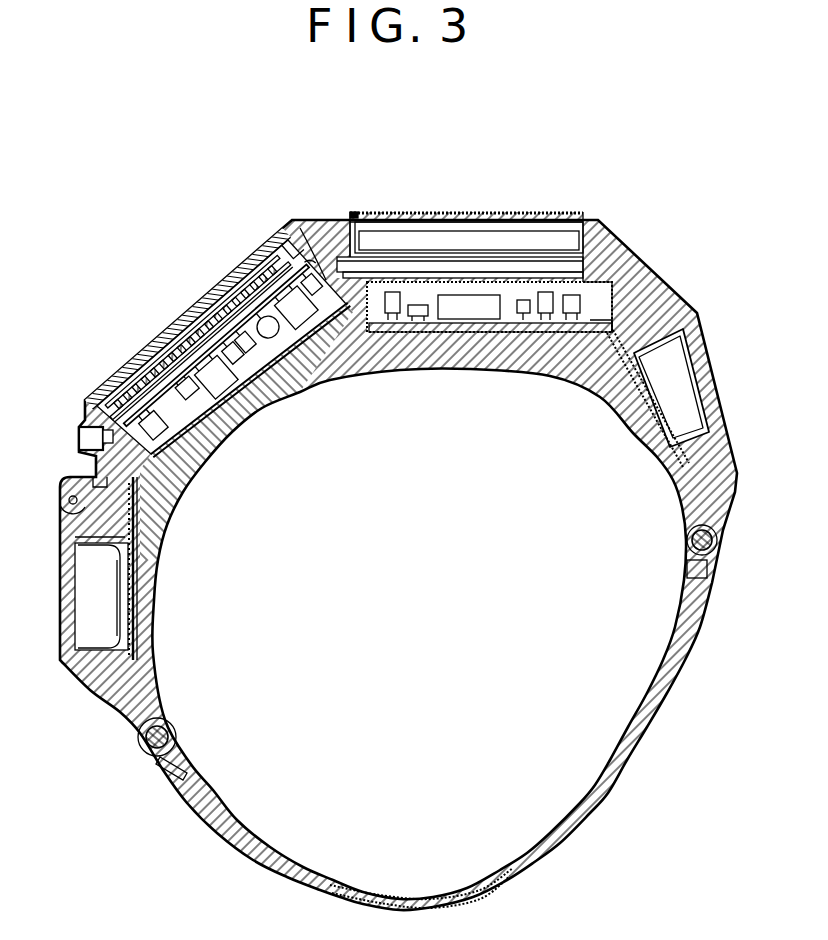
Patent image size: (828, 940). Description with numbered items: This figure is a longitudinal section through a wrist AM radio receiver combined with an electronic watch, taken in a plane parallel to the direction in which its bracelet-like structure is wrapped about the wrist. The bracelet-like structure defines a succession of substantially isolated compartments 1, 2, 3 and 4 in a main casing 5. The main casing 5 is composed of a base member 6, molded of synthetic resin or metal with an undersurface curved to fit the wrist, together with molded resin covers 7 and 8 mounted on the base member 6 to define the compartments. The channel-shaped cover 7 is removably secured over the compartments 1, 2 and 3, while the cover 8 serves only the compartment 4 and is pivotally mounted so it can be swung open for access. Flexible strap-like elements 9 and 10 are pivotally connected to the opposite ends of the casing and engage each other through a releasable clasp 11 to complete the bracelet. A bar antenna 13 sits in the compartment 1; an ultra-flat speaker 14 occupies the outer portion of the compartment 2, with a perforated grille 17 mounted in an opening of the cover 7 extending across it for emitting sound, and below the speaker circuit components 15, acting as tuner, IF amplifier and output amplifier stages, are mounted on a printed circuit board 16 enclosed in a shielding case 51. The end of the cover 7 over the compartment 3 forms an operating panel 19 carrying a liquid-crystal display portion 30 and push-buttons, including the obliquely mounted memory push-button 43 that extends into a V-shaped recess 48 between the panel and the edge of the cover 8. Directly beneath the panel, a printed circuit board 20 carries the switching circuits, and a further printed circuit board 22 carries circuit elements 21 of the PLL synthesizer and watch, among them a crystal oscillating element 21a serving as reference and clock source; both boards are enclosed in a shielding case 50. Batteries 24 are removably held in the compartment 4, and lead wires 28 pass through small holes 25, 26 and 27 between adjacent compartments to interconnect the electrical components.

The compartment 1 is at (697, 320).
The compartment 2 is at (607, 263).
The compartment 3 is at (278, 250).
The compartment 4 is at (140, 553).
The main casing 5 is at (446, 394).
The base member 6 is at (508, 345).
The cover 7 is at (331, 221).
The cover 8 is at (77, 658).
The flexible strap-like element 9 is at (213, 828).
The flexible strap-like element 10 is at (657, 660).
The clasp 11 is at (417, 893).
The bar antenna 13 is at (680, 371).
The ultra-flat speaker 14 is at (540, 238).
The circuit components 15 is at (423, 303).
The printed circuit board 16 is at (478, 337).
The display cover plate 17 is at (506, 224).
The operating panel 19 is at (137, 357).
The printed circuit board 20 is at (167, 360).
The circuit elements 21 is at (318, 345).
The oscillating element 21a is at (227, 427).
The printed circuit board 22 is at (200, 470).
The batteries 24 is at (110, 620).
The hole 25 is at (603, 331).
The hole 26 is at (312, 252).
The hole 27 is at (173, 507).
The lead wires 28 is at (612, 352).
The display portion 30 is at (222, 287).
The memory push-button 43 is at (80, 420).
The V-shaped recess 48 is at (103, 447).
The shielding case 50 is at (273, 387).
The shielding case 51 is at (396, 297).